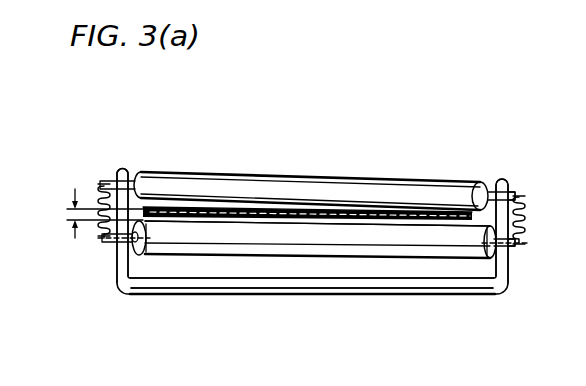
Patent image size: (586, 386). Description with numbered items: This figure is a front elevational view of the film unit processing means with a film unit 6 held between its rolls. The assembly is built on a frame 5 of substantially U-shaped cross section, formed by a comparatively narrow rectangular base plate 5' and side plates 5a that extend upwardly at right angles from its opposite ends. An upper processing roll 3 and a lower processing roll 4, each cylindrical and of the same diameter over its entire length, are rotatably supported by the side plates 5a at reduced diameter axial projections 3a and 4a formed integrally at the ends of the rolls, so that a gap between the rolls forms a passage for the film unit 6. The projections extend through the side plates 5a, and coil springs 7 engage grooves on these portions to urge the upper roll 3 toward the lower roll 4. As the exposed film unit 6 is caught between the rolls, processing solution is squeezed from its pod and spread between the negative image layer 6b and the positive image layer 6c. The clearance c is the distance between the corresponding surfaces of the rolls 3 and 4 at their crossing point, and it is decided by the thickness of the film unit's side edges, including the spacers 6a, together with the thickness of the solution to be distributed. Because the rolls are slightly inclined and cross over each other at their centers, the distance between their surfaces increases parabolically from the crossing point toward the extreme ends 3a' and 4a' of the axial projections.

The upper processing roll 3 is at (267, 190).
The axial projection of upper roll 3a is at (300, 156).
The extreme end of upper roll axial projection 3a' is at (524, 156).
The lower processing roll 4 is at (226, 270).
The axial projection of lower roll 4a is at (286, 302).
The extreme end of lower roll axial projection 4a' is at (541, 266).
The frame 5 is at (312, 271).
The side plate 5a is at (119, 274).
The base plate 5' is at (312, 325).
The film unit 6 is at (210, 200).
The spacer 6a is at (147, 226).
The negative image layer 6b is at (331, 200).
The positive image layer 6c is at (283, 223).
The coil spring 7 is at (99, 238).
The clearance c is at (70, 210).